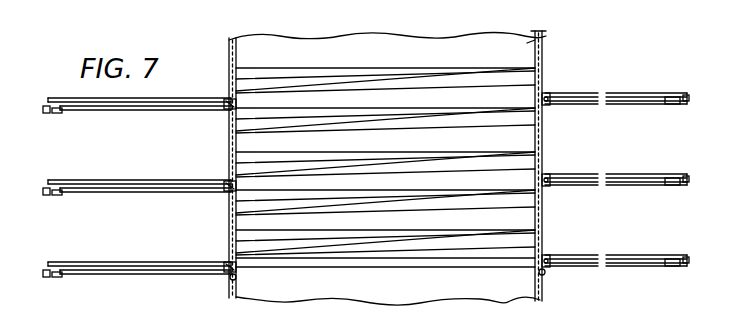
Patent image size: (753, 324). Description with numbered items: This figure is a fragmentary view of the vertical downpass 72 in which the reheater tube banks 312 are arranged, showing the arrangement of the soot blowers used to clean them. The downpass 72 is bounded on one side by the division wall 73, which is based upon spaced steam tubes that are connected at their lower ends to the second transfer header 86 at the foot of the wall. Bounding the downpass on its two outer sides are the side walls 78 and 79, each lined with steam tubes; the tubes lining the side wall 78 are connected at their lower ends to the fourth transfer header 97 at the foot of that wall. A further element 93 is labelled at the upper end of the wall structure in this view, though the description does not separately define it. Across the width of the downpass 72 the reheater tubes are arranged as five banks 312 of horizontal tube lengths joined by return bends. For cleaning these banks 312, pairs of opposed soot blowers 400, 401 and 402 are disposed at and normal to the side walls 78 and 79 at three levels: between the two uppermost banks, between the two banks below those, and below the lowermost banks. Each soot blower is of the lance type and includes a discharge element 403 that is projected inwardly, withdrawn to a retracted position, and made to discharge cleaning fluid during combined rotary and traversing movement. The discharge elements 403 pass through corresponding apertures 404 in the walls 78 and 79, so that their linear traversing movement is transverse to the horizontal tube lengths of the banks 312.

The downpass 72 is at (451, 66).
The division wall 73 is at (529, 285).
The side wall 78 is at (240, 68).
The side wall 79 is at (538, 53).
The second transfer header 86 is at (393, 268).
The top rail 93 is at (535, 40).
The fourth transfer header 97 is at (232, 280).
The bank 312 is at (356, 70).
The soot blower 400 is at (133, 111).
The soot blower 401 is at (125, 193).
The soot blower 402 is at (147, 274).
The discharge element 403 is at (178, 111).
The aperture 404 is at (237, 108).